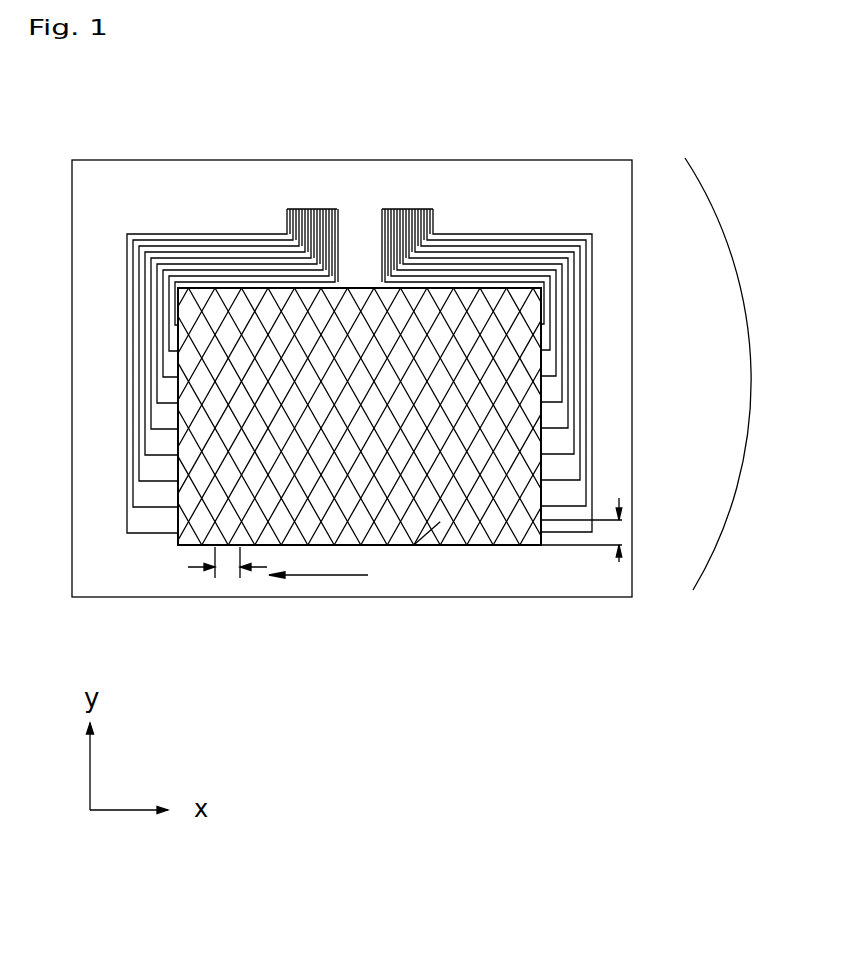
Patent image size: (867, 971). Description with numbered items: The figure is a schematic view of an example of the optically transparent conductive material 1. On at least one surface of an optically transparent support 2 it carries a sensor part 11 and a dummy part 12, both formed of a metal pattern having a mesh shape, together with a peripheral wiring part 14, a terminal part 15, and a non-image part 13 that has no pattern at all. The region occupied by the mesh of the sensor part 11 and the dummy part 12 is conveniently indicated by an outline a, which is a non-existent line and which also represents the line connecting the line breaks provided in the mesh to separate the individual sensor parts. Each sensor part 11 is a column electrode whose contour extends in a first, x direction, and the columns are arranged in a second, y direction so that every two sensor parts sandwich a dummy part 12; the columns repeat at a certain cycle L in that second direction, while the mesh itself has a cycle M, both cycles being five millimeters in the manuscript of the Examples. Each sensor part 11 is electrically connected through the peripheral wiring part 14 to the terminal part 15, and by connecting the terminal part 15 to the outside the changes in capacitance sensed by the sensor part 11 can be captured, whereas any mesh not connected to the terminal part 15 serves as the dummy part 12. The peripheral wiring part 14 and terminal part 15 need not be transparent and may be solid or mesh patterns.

The optically transparent conductive material 1 is at (730, 374).
The optically transparent support 2 is at (633, 160).
The sensor part 11 is at (202, 534).
The dummy part 12 is at (498, 522).
The non-image part 13 is at (338, 575).
The peripheral wiring part 14 is at (207, 235).
The terminal part 15 is at (432, 211).
The outline a is at (435, 534).
The cycle M is at (227, 562).
The cycle L is at (581, 530).